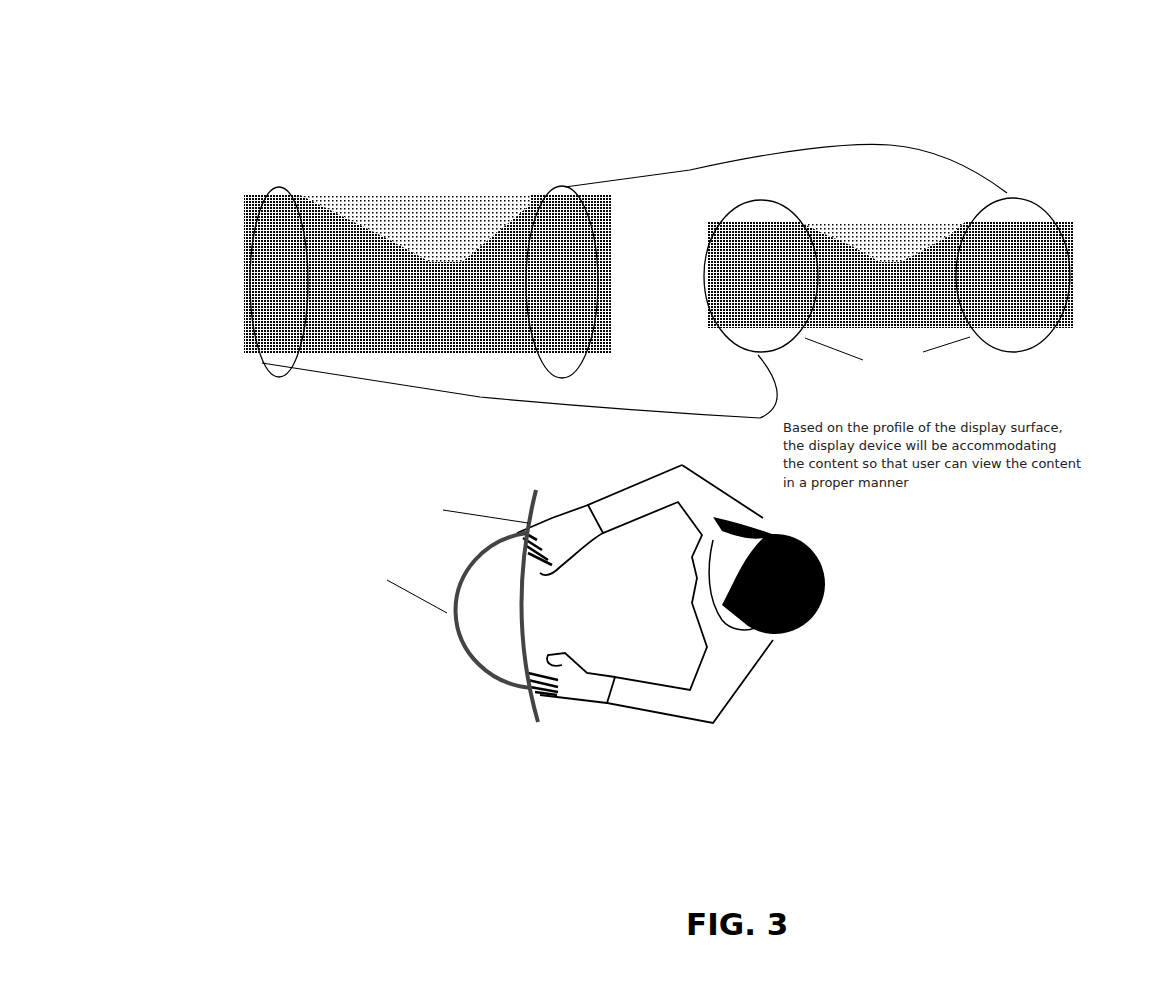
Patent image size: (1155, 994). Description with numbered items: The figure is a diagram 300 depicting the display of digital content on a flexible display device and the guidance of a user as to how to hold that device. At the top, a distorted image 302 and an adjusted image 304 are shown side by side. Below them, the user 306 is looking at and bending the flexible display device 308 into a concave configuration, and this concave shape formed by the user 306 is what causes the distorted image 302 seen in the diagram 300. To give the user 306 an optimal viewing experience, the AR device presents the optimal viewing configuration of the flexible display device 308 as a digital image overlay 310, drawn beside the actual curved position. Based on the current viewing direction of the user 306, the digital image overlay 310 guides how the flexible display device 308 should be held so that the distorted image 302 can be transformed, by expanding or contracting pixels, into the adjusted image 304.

The diagram 300 is at (194, 58).
The distorted image 302 is at (363, 193).
The adjusted image 304 is at (1067, 221).
The user 306 is at (837, 577).
The flexible display device 308 is at (453, 637).
The digital image overlay 310 is at (538, 717).